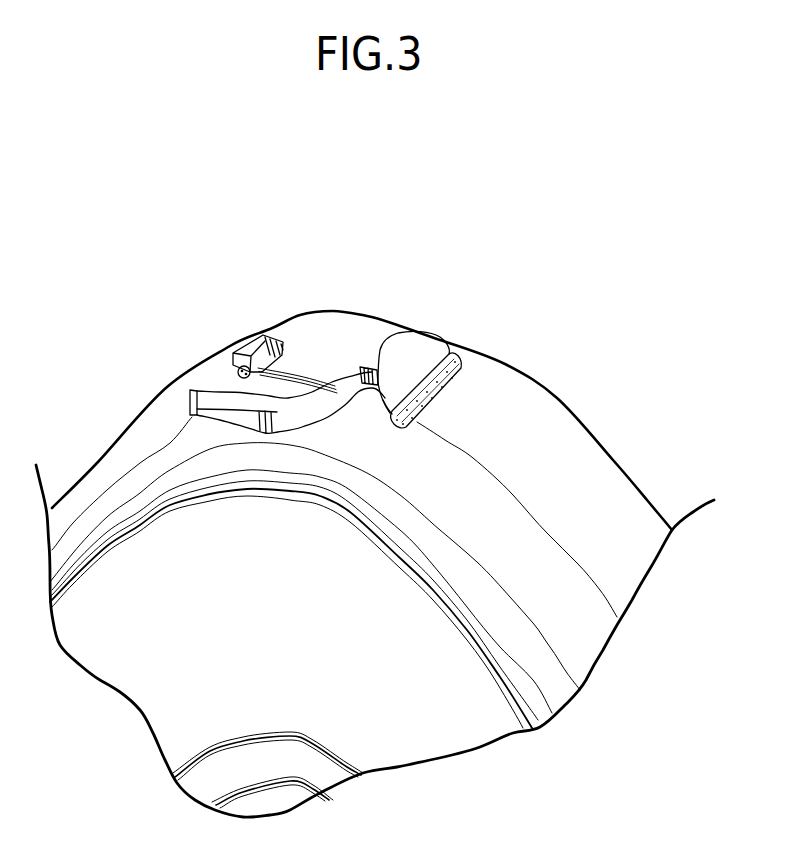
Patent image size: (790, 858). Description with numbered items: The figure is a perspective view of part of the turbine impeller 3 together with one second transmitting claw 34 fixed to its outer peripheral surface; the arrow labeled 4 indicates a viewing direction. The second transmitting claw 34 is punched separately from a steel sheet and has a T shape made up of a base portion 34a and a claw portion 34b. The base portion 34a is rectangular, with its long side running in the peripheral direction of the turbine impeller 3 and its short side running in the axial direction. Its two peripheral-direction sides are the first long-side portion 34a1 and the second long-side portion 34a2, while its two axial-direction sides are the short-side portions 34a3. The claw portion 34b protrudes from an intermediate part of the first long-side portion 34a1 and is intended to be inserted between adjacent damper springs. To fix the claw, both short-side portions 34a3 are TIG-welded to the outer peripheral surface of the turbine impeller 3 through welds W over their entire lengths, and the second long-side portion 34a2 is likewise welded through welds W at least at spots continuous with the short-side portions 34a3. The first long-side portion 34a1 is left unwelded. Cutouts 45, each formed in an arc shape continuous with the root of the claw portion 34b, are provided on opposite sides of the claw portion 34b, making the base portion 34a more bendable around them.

The turbine impeller 3 is at (548, 405).
The viewing direction arrow 4 is at (364, 265).
The second transmitting claw 34 is at (330, 407).
The base portion 34a is at (337, 337).
The claw portion 34b is at (243, 393).
The first long-side portion 34a1 is at (238, 373).
The second long-side portion 34a2 is at (390, 315).
The short-side portion 34a3 is at (236, 343).
The cutout 45 is at (250, 333).
The weld W is at (432, 410).